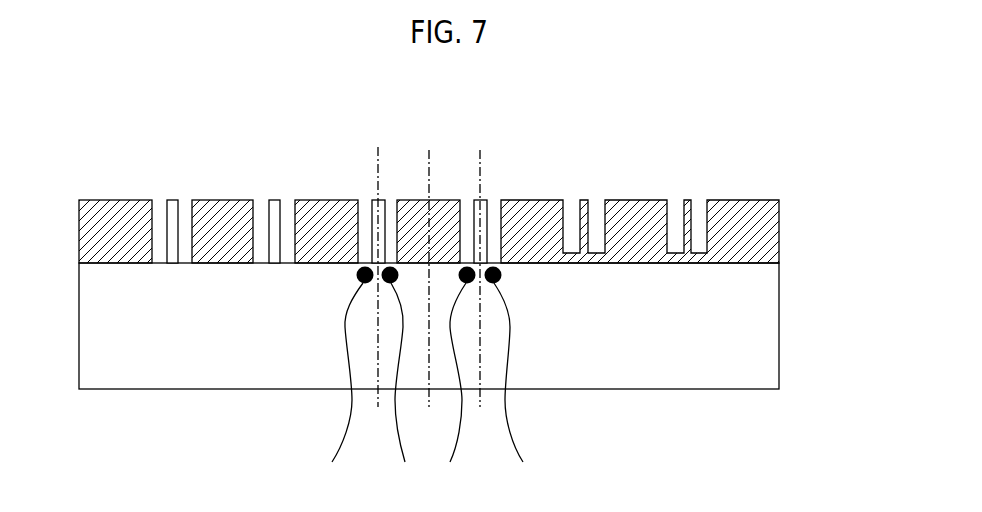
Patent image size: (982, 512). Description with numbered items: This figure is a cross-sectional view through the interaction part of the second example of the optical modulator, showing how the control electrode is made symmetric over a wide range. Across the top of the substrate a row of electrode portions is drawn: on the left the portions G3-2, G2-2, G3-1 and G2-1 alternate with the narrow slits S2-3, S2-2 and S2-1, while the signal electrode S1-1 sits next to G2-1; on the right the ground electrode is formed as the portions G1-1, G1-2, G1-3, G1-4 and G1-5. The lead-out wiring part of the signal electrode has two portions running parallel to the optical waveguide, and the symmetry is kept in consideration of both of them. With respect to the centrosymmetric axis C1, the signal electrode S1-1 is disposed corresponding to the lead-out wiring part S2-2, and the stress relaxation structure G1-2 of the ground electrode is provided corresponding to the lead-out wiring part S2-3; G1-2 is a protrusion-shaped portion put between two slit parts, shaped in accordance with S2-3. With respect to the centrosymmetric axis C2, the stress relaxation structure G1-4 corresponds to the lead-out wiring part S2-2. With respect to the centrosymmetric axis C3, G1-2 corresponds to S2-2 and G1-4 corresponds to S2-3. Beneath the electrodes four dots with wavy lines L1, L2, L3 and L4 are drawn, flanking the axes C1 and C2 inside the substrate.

The third gate electrode G3-2 is at (110, 204).
The lead-out wiring part S2-3 is at (173, 200).
The second gate electrode G2-2 is at (223, 204).
The lead-out wiring part S2-2 is at (275, 200).
The third gate electrode G3-1 is at (338, 205).
The second slit S2-1 is at (387, 207).
The second gate electrode G2-1 is at (443, 209).
The signal electrode S1-1 is at (485, 207).
The first gate electrode portion G1-1 is at (532, 210).
The stress relaxation structure of the ground electrode G1-2 is at (584, 194).
The first gate electrode portion G1-3 is at (648, 210).
The stress relaxation structure of the ground electrode G1-4 is at (689, 196).
The first gate electrode portion G1-5 is at (758, 213).
The centrosymmetric axis C1 is at (376, 293).
The centrosymmetric axis C2 is at (486, 295).
The centrosymmetric axis C3 is at (431, 295).
The electron trajectory line L1 is at (338, 376).
The electron trajectory line L2 is at (405, 379).
The electron trajectory line L3 is at (456, 379).
The electron trajectory line L4 is at (522, 376).